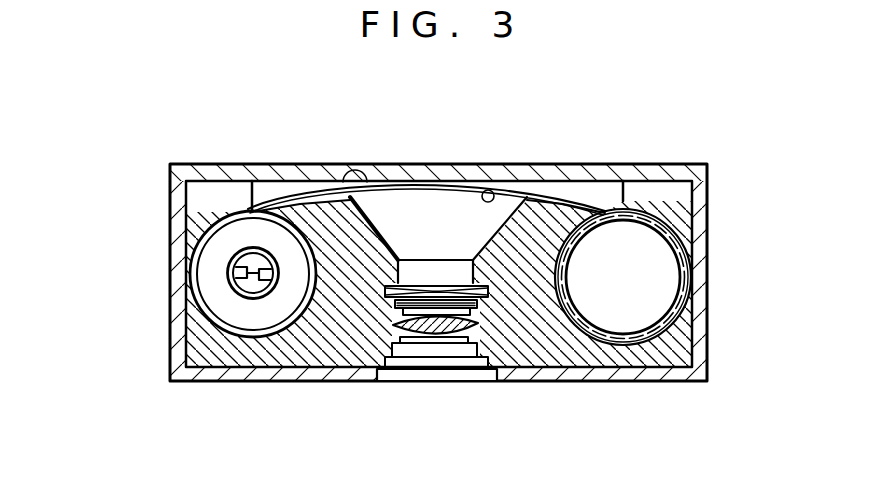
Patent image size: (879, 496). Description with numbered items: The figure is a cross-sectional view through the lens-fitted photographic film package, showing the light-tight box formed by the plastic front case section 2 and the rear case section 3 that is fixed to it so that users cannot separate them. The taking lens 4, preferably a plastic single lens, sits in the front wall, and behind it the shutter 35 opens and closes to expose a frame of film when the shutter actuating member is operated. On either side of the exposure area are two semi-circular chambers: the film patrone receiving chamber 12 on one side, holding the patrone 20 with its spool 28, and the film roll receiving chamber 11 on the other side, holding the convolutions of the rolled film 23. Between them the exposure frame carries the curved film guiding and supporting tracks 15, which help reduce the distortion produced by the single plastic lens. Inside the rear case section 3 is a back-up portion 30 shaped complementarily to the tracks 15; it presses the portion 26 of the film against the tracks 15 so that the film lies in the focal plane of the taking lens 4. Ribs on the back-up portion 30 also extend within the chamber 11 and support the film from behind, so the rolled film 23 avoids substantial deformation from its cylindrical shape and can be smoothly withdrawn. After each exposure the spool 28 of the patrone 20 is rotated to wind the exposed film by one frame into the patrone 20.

The front case section 2 is at (205, 382).
The rear case section 3 is at (214, 164).
The taking lens 4 is at (429, 339).
The film roll receiving chamber 11 is at (682, 234).
The film patrone receiving chamber 12 is at (200, 212).
The film guiding and supporting tracks 15 is at (379, 196).
The patrone 20 is at (194, 258).
The rolled film 23 is at (682, 276).
The portion of the film 26 is at (427, 183).
The spool 28 is at (233, 280).
The back-up portion 30 is at (487, 190).
The shutter 35 is at (452, 276).